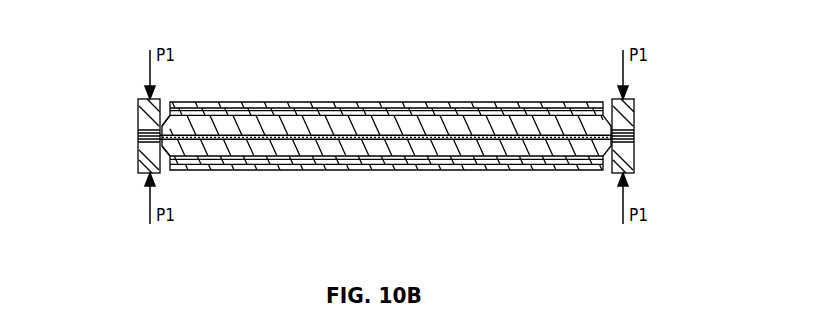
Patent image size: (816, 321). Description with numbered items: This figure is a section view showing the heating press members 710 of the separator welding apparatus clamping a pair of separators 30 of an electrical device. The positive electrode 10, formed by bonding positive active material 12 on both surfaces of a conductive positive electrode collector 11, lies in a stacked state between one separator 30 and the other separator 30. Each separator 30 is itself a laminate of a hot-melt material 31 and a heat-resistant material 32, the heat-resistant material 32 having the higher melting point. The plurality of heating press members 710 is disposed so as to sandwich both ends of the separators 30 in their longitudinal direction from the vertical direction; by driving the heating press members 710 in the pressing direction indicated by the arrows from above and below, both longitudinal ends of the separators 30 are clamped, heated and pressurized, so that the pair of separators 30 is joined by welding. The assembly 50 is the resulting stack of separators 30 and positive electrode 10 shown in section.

The heating press member 710 is at (138, 100).
The laminated glass assembly 50 is at (272, 48).
The hot-melt material 31 is at (545, 104).
The heat-resistant material 32 is at (512, 111).
The separator 30 is at (232, 107).
The positive electrode collector 11 is at (396, 132).
The positive active material 12 is at (435, 148).
The positive electrode 10 is at (260, 107).